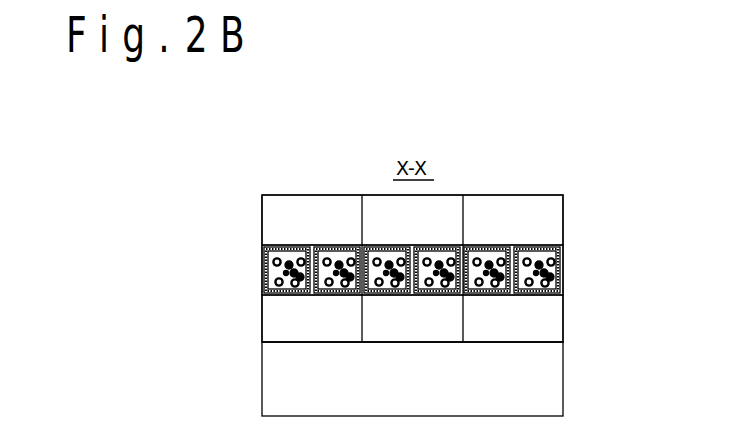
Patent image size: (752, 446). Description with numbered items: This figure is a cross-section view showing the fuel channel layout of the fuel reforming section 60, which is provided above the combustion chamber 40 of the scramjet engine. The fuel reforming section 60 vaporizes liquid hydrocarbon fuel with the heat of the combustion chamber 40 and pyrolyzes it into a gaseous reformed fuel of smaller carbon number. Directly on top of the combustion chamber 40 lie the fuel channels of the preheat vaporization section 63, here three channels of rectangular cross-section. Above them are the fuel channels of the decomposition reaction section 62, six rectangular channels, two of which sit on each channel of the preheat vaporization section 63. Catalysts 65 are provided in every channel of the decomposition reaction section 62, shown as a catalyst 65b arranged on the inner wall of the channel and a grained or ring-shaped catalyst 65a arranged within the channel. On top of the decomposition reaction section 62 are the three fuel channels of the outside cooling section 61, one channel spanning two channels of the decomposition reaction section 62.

The combustion chamber 40 is at (262, 382).
The fuel reforming section 60 is at (205, 212).
The outside cooling section 61 is at (262, 220).
The decomposition reaction section 62 is at (445, 270).
The preheat vaporization section 63 is at (262, 327).
The catalyst 65 is at (469, 269).
The grained or ring-shaped catalyst 65a is at (563, 268).
The inner-wall catalyst 65b is at (563, 289).